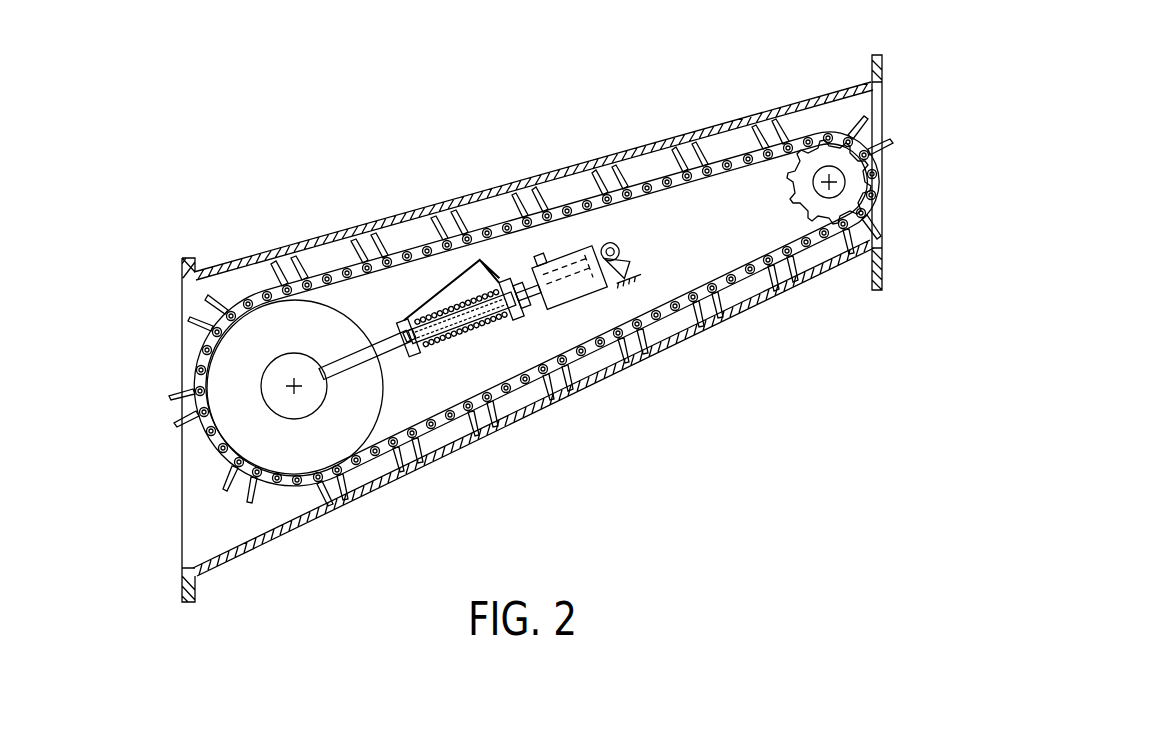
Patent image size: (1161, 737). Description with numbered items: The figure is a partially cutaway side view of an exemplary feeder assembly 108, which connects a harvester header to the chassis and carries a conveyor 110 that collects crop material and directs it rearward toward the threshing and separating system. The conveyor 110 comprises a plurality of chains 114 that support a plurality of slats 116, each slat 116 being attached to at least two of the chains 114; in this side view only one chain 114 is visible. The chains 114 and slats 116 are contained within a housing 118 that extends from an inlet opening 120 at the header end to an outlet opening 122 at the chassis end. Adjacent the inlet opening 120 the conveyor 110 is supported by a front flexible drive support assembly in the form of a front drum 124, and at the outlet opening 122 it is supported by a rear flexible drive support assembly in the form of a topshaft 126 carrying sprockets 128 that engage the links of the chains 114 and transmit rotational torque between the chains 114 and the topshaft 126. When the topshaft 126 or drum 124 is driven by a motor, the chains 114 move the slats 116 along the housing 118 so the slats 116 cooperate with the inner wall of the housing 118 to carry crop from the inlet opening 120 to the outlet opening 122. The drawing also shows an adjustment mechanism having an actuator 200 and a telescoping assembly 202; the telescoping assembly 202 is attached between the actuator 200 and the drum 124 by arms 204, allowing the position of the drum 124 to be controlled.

The feeder assembly 108 is at (546, 81).
The conveyor 110 is at (404, 234).
The chains 114 is at (483, 235).
The slats 116 is at (175, 395).
The housing 118 is at (680, 135).
The inlet opening 120 is at (183, 352).
The outlet opening 122 is at (885, 120).
The front drum 124 is at (220, 440).
The topshaft 126 is at (825, 165).
The sprockets 128 is at (821, 272).
The actuator 200 is at (582, 303).
The telescoping assembly 202 is at (476, 351).
The arms 204 is at (384, 365).